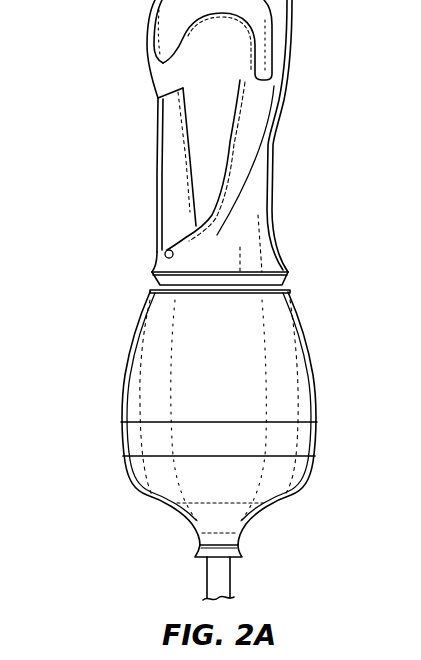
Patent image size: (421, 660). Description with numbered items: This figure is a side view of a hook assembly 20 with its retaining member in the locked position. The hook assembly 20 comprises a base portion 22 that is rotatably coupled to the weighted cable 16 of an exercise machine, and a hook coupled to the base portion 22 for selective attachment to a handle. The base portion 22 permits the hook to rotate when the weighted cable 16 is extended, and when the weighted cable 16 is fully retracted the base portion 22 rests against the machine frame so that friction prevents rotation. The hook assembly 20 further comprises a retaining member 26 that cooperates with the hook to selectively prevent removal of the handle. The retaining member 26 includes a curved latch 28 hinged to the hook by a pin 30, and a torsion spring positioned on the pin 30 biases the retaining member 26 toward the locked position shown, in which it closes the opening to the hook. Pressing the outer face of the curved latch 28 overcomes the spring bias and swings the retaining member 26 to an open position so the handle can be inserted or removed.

The hook assembly 20 is at (169, 164).
The base portion 22 is at (275, 357).
The weighted cable 16 is at (222, 578).
The retaining member 26 is at (163, 207).
The curved latch 28 is at (175, 143).
The pin 30 is at (173, 255).